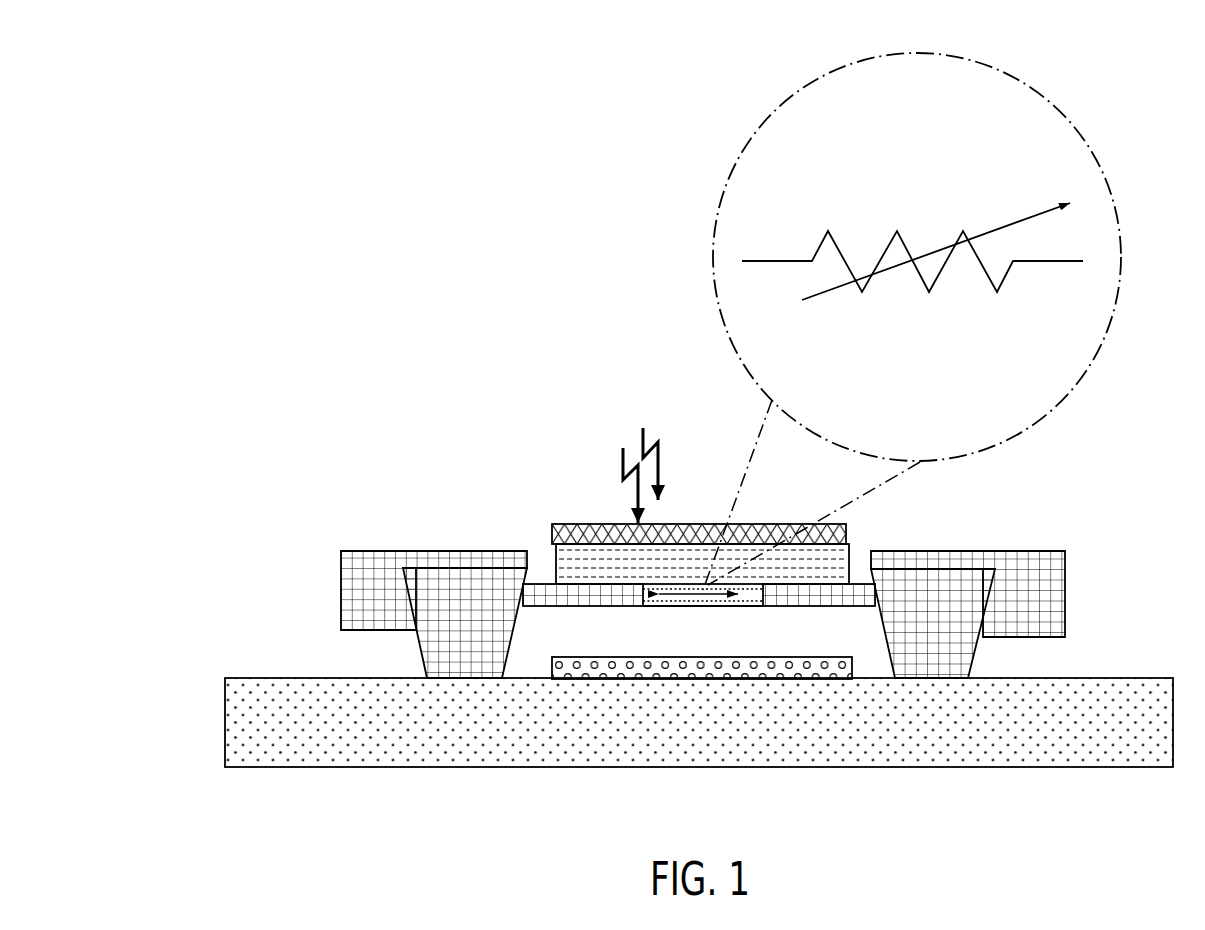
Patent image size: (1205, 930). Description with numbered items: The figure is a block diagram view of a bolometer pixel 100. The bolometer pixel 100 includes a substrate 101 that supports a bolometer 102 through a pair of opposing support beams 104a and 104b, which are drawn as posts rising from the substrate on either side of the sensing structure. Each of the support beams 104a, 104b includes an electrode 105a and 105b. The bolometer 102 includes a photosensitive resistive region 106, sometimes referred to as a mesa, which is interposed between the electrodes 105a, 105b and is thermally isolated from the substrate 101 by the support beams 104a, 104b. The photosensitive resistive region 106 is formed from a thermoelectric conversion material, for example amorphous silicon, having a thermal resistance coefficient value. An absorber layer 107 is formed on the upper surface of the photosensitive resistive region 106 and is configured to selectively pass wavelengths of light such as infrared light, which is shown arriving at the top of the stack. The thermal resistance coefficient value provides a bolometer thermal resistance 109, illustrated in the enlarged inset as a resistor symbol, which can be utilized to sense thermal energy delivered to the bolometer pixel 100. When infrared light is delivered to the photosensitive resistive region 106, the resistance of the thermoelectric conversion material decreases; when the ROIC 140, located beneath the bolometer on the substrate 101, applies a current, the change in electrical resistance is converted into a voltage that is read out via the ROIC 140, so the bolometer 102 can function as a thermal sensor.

The bolometer pixel 100 is at (651, 441).
The substrate 101 is at (237, 723).
The bolometer 102 is at (700, 533).
The support beam 104a is at (433, 672).
The support beam 104b is at (968, 675).
The electrode 105a is at (347, 558).
The electrode 105b is at (1057, 559).
The photosensitive resistive region 106 is at (568, 555).
The absorber layer 107 is at (575, 535).
The bolometer thermal resistance 109 is at (1083, 137).
The ROIC 140 is at (705, 670).